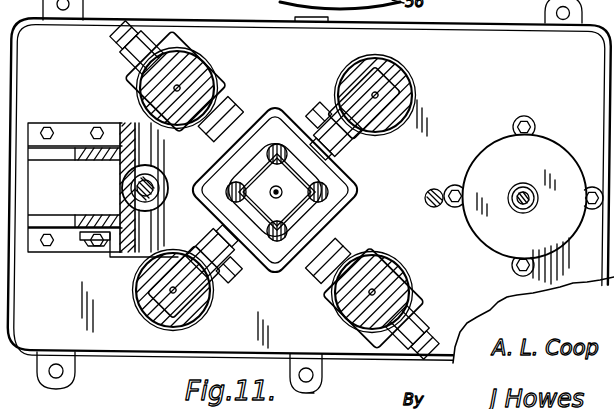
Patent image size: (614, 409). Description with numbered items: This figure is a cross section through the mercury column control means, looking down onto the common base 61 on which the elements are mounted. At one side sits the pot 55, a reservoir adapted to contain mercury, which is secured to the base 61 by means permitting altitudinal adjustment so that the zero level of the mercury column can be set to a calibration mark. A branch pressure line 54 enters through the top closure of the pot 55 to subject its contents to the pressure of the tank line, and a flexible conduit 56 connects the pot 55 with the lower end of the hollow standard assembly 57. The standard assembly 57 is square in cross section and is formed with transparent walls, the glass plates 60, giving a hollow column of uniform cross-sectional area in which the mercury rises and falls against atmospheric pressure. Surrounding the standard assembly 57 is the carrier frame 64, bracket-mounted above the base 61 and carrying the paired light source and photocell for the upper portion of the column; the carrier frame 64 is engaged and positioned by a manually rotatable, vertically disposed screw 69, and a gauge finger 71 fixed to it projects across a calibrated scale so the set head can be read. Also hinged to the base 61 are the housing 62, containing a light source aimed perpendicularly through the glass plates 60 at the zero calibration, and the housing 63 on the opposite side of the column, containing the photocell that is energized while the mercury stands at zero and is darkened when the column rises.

The branch pressure line 54 is at (516, 195).
The pot 55 is at (557, 153).
The flexible conduit 56 is at (434, 207).
The standard assembly 57 is at (262, 168).
The glass plates 60 is at (285, 157).
The base 61 is at (310, 196).
The housing 62 is at (414, 296).
The housing 63 is at (130, 90).
The carrier frame 64 is at (268, 273).
The screw 69 is at (122, 188).
The gauge finger 71 is at (86, 241).